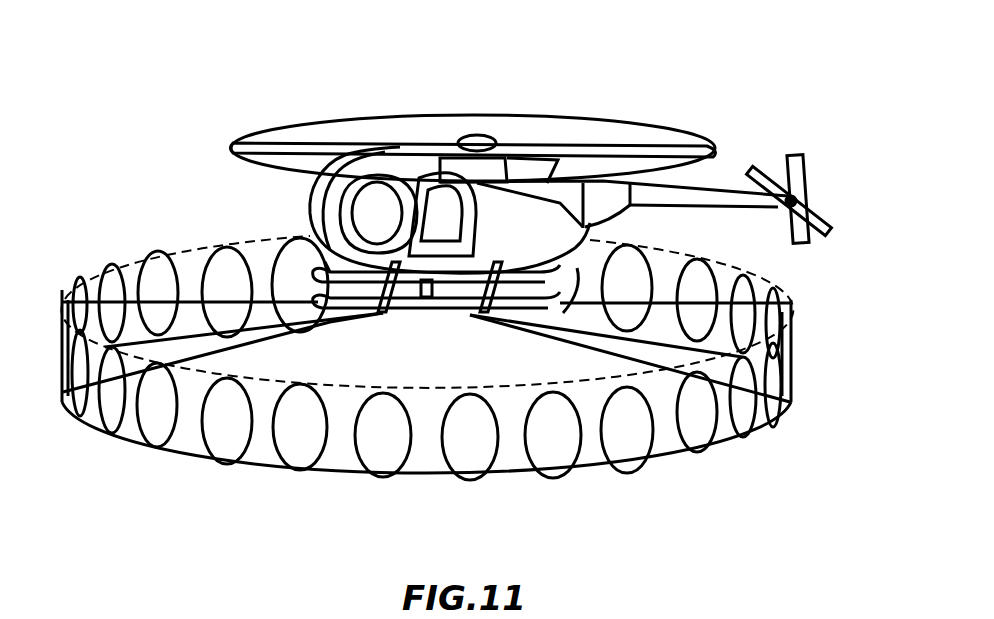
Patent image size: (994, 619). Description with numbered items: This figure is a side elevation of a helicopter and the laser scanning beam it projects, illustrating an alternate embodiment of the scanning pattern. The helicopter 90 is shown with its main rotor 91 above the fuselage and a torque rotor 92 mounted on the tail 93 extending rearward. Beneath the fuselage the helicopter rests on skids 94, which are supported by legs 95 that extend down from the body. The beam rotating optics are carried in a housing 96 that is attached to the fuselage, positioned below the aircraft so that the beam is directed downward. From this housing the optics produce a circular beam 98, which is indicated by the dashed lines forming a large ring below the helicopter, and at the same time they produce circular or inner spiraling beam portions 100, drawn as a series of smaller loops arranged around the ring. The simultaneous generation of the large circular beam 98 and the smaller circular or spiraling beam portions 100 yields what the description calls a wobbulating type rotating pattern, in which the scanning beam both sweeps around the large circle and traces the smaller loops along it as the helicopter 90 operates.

The helicopter 90 is at (537, 237).
The main rotor 91 is at (683, 152).
The torque rotor 92 is at (810, 208).
The tail 93 is at (808, 181).
The skids 94 is at (450, 318).
The legs 95 is at (383, 313).
The housing 96 is at (413, 315).
The circular beam 98 is at (600, 477).
The inner spiraling beam portions 100 is at (410, 447).